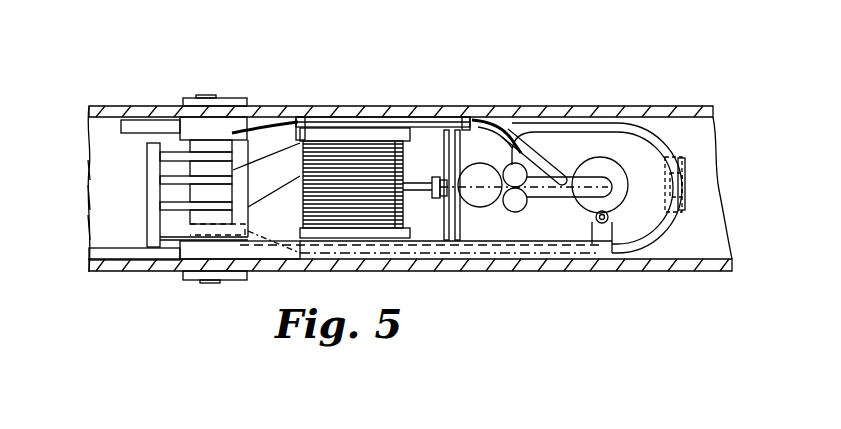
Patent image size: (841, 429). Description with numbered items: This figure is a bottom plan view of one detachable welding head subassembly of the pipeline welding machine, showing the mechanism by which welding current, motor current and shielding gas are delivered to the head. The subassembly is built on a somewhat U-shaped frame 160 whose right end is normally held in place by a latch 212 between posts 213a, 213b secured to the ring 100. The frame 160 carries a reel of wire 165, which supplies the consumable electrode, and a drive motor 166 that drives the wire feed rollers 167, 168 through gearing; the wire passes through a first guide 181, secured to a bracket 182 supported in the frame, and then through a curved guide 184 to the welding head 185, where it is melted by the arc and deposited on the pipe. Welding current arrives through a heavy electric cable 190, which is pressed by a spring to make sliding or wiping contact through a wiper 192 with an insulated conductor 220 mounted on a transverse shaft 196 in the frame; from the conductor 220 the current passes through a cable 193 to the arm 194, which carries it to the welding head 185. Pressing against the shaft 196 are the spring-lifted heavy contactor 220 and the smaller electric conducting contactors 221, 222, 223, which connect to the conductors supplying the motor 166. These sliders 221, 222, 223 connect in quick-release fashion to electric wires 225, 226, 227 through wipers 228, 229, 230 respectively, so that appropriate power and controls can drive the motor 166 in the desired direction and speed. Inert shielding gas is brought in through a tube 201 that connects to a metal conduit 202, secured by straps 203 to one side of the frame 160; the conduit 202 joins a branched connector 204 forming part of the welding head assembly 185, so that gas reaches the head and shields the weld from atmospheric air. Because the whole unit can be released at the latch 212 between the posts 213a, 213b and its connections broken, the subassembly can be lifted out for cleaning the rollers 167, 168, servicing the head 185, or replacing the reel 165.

The ring 100 is at (643, 107).
The U-shaped frame 160 is at (228, 125).
The reel of wire 165 is at (363, 138).
The drive motor 166 is at (480, 207).
The wire feed roller 167 is at (505, 162).
The wire feed roller 168 is at (523, 209).
The first guide 181 is at (440, 177).
The bracket 182 is at (450, 224).
The curved guide 184 is at (588, 165).
The welding head 185 is at (612, 212).
The electric cable 190 is at (97, 252).
The wiper 192 is at (170, 230).
The cable 193 is at (525, 256).
The arm 194 is at (614, 262).
The transverse shaft 196 is at (270, 108).
The tube 201 is at (151, 122).
The metal conduit 202 is at (527, 125).
The straps 203 is at (306, 123).
The branched connector 204 is at (536, 165).
The latch 212 is at (684, 185).
The post 213a is at (684, 158).
The post 213b is at (684, 210).
The insulated conductor 220 is at (244, 228).
The electric conducting contactor 221 is at (234, 206).
The electric conducting contactor 222 is at (234, 182).
The electric conducting contactor 223 is at (234, 160).
The electric wire 225 is at (100, 215).
The electric wire 226 is at (88, 196).
The electric wire 227 is at (88, 173).
The wiper 228 is at (170, 208).
The wiper 229 is at (170, 182).
The wiper 230 is at (170, 158).